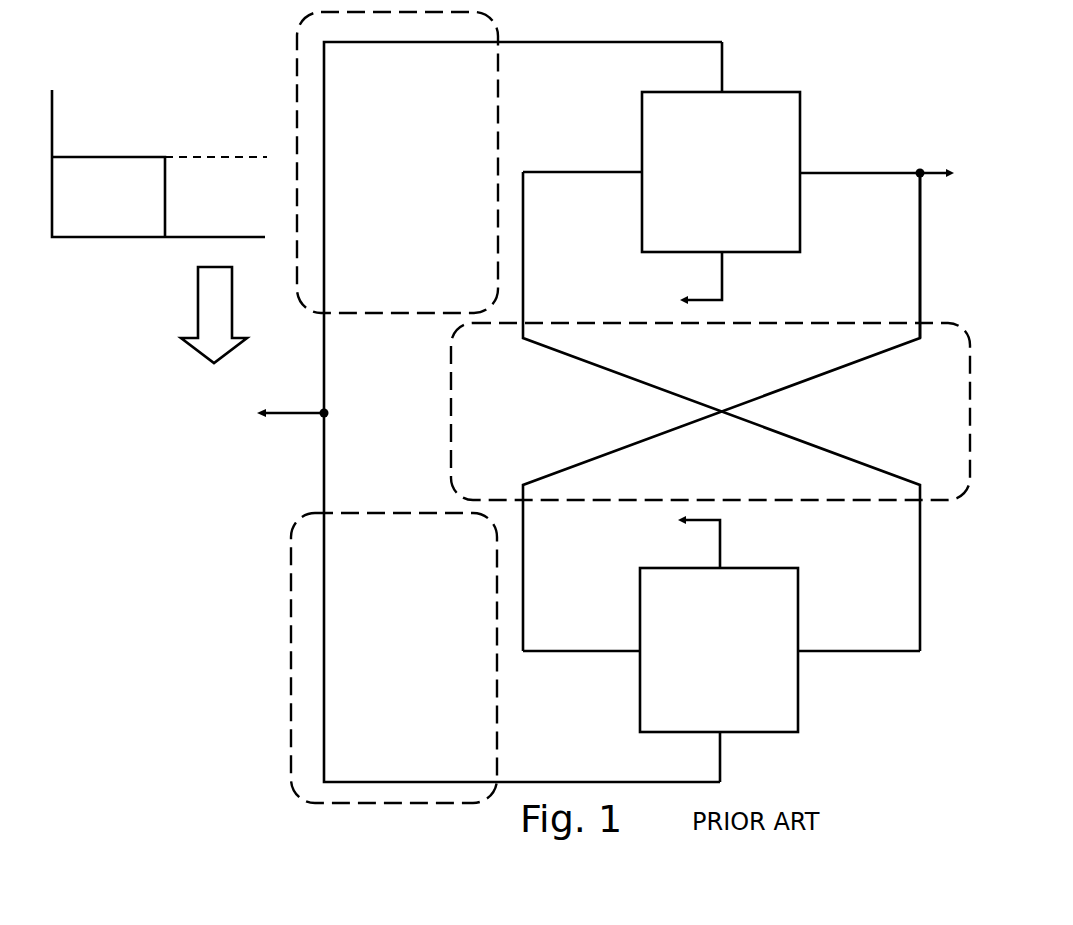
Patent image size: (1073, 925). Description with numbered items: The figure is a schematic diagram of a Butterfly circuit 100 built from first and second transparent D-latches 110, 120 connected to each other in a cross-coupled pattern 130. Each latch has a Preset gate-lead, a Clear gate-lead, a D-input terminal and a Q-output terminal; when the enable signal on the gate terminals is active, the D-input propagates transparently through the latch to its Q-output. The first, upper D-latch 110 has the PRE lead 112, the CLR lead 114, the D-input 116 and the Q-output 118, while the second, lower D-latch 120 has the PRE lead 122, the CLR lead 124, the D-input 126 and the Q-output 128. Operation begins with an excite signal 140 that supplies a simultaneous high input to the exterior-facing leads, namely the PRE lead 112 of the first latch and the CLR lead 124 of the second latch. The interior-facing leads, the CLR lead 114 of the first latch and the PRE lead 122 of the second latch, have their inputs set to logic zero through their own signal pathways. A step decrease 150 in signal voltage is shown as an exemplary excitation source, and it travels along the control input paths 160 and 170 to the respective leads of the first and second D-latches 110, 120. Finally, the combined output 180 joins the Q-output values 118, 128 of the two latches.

The Butterfly circuit 100 is at (1004, 71).
The first D-latch 110 is at (739, 184).
The PRE lead 112 is at (722, 82).
The CLR lead 114 is at (722, 262).
The D-input 116 is at (625, 174).
The Q-output 118 is at (810, 170).
The second D-latch 120 is at (737, 665).
The PRE lead 122 is at (720, 562).
The CLR lead 124 is at (720, 748).
The D-input 126 is at (614, 649).
The Q-output 128 is at (811, 649).
The cross-coupled pattern 130 is at (942, 423).
The excite signal 140 is at (253, 446).
The step decrease 150 is at (248, 215).
The control input path 160 is at (414, 96).
The control input path 170 is at (411, 580).
The combined output 180 is at (982, 249).